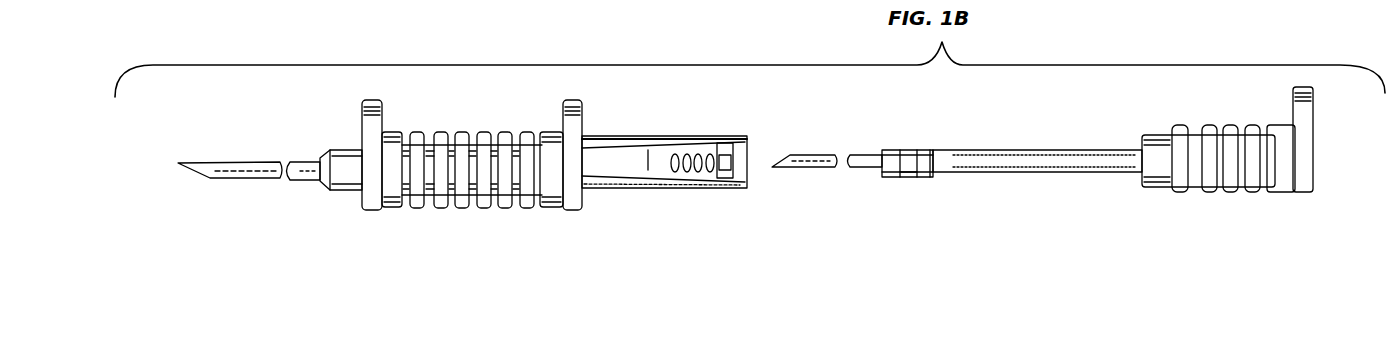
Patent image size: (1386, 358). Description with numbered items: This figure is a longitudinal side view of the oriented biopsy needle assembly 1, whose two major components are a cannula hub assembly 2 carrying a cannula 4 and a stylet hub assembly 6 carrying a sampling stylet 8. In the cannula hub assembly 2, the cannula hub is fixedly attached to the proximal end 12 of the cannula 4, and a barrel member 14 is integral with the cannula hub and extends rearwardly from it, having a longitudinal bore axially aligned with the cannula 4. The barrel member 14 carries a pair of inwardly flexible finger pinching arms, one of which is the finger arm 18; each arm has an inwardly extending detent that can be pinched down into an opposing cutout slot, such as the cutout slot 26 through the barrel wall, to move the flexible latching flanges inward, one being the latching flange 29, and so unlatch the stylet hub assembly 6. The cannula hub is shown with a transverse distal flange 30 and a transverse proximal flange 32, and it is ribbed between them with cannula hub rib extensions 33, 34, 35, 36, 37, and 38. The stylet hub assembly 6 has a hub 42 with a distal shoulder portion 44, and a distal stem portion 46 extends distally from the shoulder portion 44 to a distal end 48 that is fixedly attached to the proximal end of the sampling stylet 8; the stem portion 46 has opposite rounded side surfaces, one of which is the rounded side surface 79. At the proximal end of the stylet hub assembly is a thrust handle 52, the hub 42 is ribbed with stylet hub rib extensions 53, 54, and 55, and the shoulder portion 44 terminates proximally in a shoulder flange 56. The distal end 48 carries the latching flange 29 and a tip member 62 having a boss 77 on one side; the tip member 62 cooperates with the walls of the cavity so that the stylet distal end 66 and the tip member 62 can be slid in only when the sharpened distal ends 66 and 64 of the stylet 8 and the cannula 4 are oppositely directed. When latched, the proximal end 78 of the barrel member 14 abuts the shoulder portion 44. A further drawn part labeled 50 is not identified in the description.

The oriented biopsy needle assembly 1 is at (212, 106).
The cannula hub assembly 2 is at (180, 175).
The cannula 4 is at (255, 173).
The stylet hub assembly 6 is at (960, 250).
The sampling stylet 8 is at (810, 168).
The proximal end of the cannula 12 is at (307, 161).
The barrel member 14 is at (677, 190).
The finger pinching arm 18 is at (657, 162).
The cutout slot 26 is at (724, 179).
The flexible latching flange 29 is at (915, 160).
The transverse distal flange 30 is at (373, 205).
The transverse proximal flange 32 is at (572, 205).
The cannula hub rib extension 33 is at (416, 205).
The cannula hub rib extension 34 is at (441, 132).
The cannula hub rib extension 35 is at (461, 205).
The cannula hub rib extension 36 is at (484, 132).
The cannula hub rib extension 37 is at (505, 205).
The cannula hub rib extension 38 is at (526, 132).
The stylet hub 42 is at (1222, 265).
The distal shoulder portion 44 is at (1155, 138).
The distal stem portion 46 is at (1038, 167).
The distal end of the stylet hub assembly 48 is at (908, 142).
The drive rod 50 is at (868, 167).
The thrust handle 52 is at (1305, 190).
The stylet hub rib extension 53 is at (1208, 193).
The stylet hub rib extension 54 is at (1232, 125).
The stylet hub rib extension 55 is at (1250, 193).
The shoulder flange 56 is at (1178, 193).
The tip member 62 is at (893, 150).
The sharpened distal end of the cannula 64 is at (197, 174).
The stylet distal end 66 is at (778, 162).
The boss 77 is at (893, 178).
The proximal end of the barrel member 78 is at (742, 168).
The rounded side surface 79 is at (1012, 160).